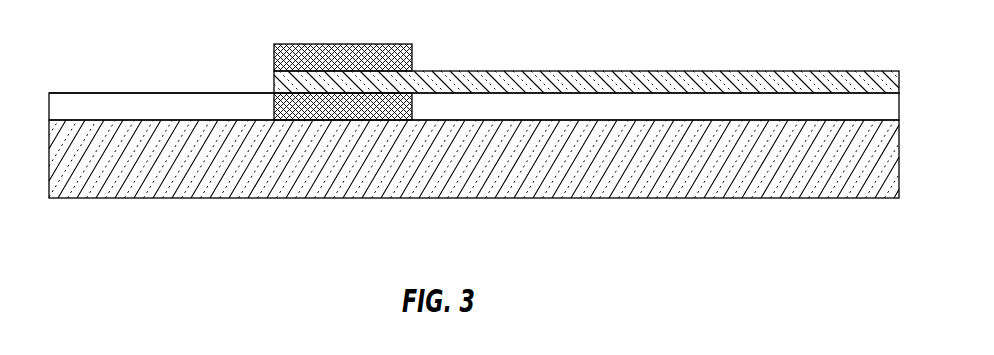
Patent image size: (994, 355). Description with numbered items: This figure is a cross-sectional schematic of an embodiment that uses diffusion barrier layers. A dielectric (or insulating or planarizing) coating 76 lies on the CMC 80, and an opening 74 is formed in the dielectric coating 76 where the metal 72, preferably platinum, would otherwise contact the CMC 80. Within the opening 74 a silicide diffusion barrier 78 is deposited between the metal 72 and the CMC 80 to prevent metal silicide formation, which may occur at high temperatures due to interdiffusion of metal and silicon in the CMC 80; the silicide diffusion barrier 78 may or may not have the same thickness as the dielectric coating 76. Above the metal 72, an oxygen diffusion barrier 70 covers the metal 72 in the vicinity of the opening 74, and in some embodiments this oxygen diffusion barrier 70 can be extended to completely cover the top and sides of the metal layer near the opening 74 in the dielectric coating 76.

The oxygen diffusion barrier 70 is at (300, 45).
The metal 72 is at (707, 84).
The opening 74 is at (272, 107).
The dielectric coating 76 is at (562, 110).
The silicide diffusion barrier 78 is at (307, 120).
The CMC 80 is at (530, 183).